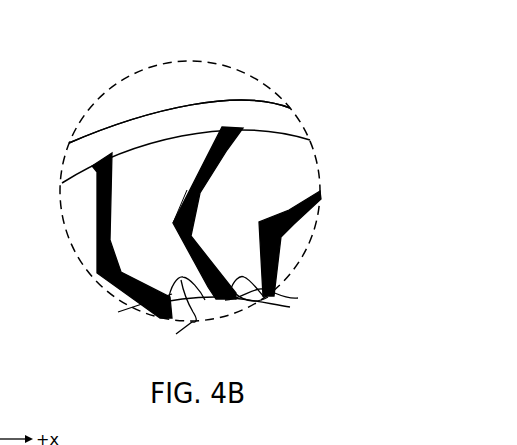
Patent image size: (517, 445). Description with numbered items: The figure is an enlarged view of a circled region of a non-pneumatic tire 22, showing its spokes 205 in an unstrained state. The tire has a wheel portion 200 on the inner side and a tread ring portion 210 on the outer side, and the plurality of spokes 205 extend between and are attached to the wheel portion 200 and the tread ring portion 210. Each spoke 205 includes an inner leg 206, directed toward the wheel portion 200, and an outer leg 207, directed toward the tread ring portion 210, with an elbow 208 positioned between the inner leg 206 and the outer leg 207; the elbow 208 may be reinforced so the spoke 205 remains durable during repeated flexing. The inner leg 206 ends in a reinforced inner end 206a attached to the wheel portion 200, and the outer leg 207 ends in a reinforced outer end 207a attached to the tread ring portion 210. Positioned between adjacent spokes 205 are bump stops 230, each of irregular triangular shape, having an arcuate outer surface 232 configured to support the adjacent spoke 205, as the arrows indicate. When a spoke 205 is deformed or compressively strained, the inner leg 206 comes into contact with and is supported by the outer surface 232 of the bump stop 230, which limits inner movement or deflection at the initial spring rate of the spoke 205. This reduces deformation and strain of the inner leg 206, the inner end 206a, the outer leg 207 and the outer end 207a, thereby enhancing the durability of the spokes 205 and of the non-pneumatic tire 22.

The non-pneumatic tire 22 is at (283, 62).
The tread ring portion 210 is at (291, 116).
The reinforced outer end 207a is at (220, 100).
The outer leg 207 is at (207, 172).
The spokes 205 is at (90, 198).
The elbow 208 is at (173, 222).
The inner leg 206 is at (265, 260).
The reinforced inner end 206a is at (222, 297).
The bump stops 230 is at (208, 309).
The outer surface 232 is at (169, 317).
The wheel portion 200 is at (207, 302).